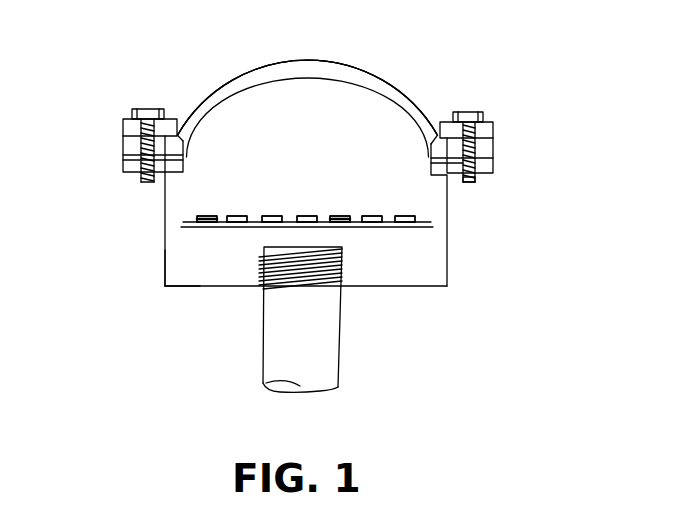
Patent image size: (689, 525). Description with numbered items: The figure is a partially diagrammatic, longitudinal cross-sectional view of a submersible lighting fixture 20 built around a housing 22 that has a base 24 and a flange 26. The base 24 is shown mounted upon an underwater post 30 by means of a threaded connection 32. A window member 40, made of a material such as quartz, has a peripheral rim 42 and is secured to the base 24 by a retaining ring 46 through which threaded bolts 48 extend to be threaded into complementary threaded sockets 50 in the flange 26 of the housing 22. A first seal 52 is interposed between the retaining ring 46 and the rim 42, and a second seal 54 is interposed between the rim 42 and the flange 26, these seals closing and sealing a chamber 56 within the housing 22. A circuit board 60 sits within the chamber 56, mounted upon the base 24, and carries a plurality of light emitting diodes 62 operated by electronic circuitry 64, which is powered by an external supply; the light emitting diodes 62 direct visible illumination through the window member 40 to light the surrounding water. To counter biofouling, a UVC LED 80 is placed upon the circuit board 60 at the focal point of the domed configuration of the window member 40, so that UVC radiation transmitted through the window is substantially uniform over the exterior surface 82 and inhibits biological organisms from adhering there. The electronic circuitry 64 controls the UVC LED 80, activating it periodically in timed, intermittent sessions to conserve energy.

The submersible lighting fixture 20 is at (395, 79).
The housing 22 is at (156, 233).
The base 24 is at (172, 260).
The flange 26 is at (123, 171).
The underwater post 30 is at (264, 350).
The threaded connection 32 is at (333, 272).
The window member 40 is at (260, 65).
The peripheral rim 42 is at (488, 150).
The retaining ring 46 is at (496, 121).
The threaded bolts 48 is at (471, 111).
The threaded sockets 50 is at (468, 180).
The first seal 52 is at (125, 127).
The second seal 54 is at (124, 157).
The chamber 56 is at (340, 153).
The circuit board 60 is at (431, 224).
The light emitting diodes 62 is at (274, 214).
The electronic circuitry 64 is at (207, 214).
The UVC LED 80 is at (308, 214).
The exterior surface 82 is at (334, 61).